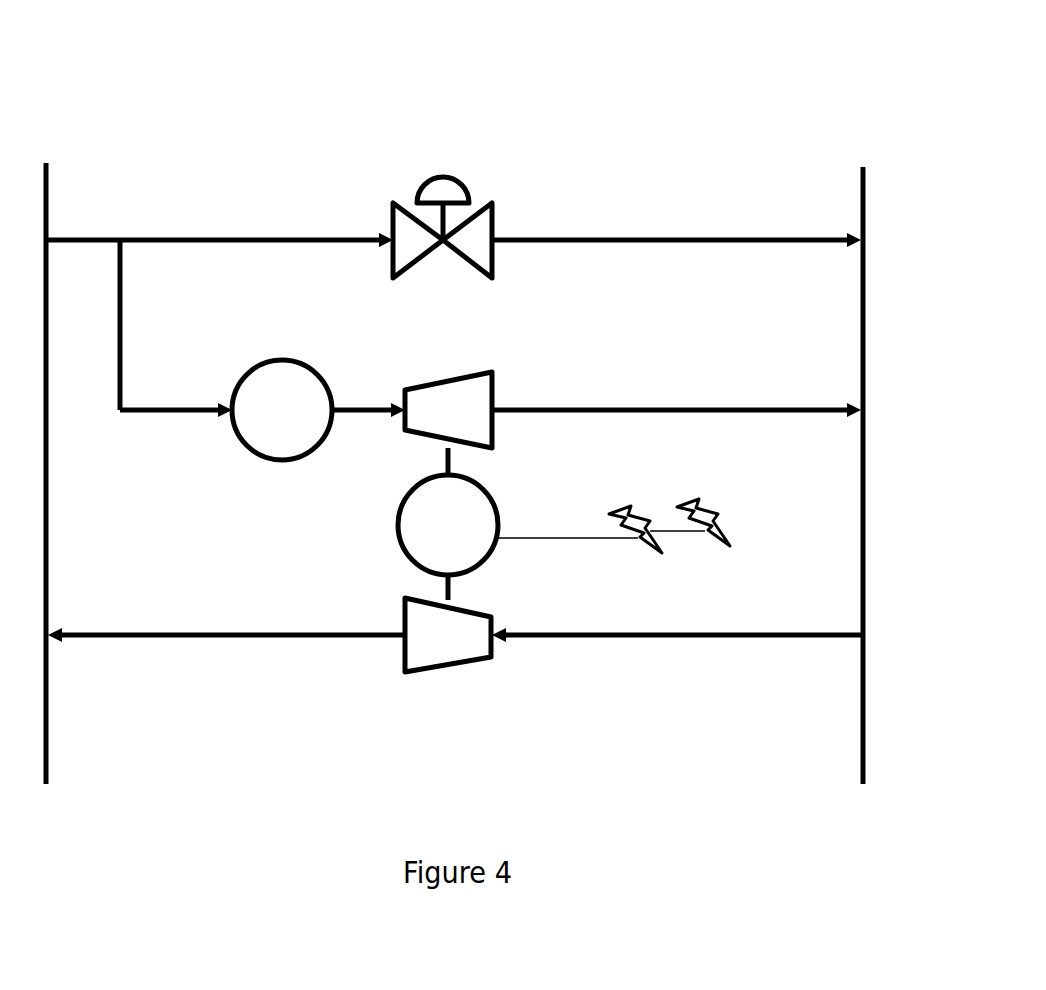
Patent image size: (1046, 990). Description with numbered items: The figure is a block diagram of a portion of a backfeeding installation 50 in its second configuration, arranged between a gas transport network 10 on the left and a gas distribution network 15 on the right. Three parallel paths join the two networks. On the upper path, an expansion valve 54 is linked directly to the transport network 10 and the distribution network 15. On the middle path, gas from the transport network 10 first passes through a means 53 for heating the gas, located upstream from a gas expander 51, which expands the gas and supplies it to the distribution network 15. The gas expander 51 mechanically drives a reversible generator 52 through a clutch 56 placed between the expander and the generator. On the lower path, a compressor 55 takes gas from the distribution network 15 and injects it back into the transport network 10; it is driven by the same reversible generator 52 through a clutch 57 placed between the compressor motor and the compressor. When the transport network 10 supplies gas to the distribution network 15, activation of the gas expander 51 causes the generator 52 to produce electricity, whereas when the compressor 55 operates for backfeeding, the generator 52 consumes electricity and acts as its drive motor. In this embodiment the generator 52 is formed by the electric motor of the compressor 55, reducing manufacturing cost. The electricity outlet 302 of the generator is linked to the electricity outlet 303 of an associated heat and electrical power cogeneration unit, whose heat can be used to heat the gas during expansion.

The transport network 10 is at (49, 524).
The distribution network 15 is at (866, 302).
The backfeeding installation 50 is at (589, 116).
The gas expander 51 is at (470, 388).
The reversible generator 52 is at (474, 526).
The means for heating the gas 53 is at (270, 437).
The expansion valve 54 is at (404, 238).
The compressor 55 is at (446, 657).
The clutch 56 is at (441, 456).
The clutch 57 is at (460, 591).
The electricity outlet of the generator 302 is at (647, 548).
The electricity outlet of the cogeneration unit 303 is at (715, 542).